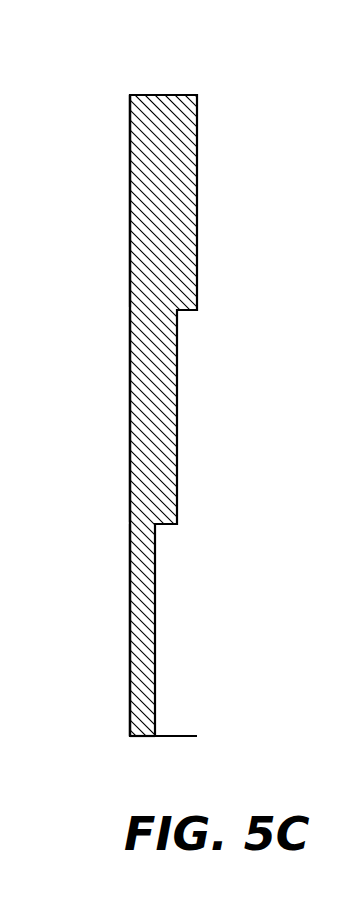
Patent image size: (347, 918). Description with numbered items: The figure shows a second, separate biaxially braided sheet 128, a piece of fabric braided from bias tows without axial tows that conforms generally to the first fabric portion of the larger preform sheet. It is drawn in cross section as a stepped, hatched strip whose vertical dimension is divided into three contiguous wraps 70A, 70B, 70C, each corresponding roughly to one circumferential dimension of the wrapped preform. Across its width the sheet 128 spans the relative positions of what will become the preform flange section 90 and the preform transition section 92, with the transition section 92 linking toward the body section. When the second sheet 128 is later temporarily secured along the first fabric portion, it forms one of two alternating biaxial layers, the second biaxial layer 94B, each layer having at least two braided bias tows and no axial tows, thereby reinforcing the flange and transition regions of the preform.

The second biaxial layer 94B is at (160, 110).
The second biaxially braided sheet 128 is at (130, 95).
The first wrap 70A is at (105, 96).
The second wrap 70B is at (105, 310).
The third wrap 70C is at (105, 524).
The preform flange section 90 is at (153, 749).
The preform transition section 92 is at (196, 749).